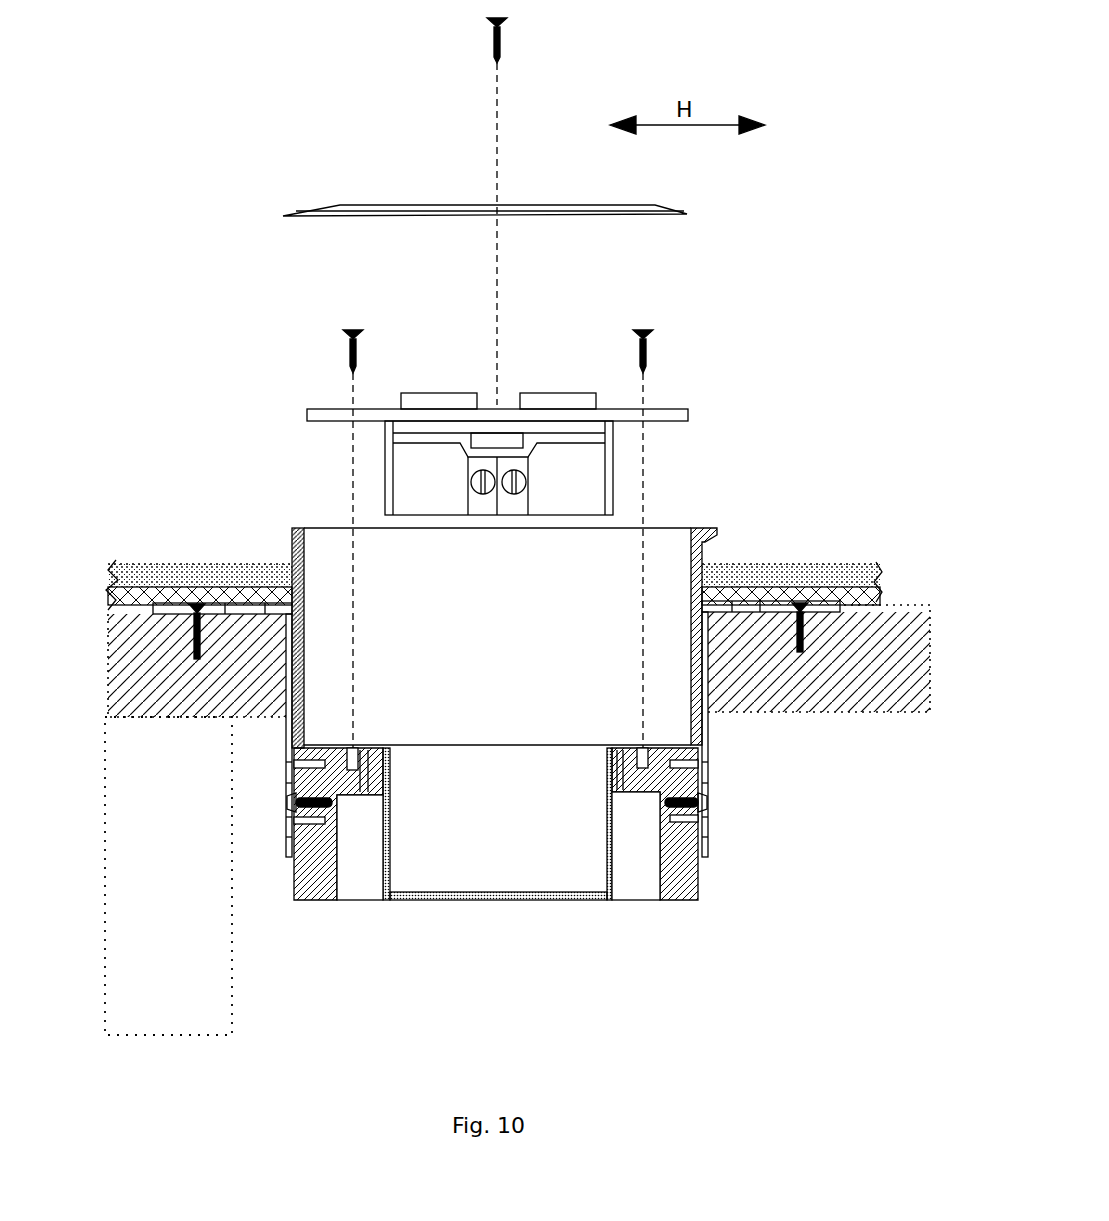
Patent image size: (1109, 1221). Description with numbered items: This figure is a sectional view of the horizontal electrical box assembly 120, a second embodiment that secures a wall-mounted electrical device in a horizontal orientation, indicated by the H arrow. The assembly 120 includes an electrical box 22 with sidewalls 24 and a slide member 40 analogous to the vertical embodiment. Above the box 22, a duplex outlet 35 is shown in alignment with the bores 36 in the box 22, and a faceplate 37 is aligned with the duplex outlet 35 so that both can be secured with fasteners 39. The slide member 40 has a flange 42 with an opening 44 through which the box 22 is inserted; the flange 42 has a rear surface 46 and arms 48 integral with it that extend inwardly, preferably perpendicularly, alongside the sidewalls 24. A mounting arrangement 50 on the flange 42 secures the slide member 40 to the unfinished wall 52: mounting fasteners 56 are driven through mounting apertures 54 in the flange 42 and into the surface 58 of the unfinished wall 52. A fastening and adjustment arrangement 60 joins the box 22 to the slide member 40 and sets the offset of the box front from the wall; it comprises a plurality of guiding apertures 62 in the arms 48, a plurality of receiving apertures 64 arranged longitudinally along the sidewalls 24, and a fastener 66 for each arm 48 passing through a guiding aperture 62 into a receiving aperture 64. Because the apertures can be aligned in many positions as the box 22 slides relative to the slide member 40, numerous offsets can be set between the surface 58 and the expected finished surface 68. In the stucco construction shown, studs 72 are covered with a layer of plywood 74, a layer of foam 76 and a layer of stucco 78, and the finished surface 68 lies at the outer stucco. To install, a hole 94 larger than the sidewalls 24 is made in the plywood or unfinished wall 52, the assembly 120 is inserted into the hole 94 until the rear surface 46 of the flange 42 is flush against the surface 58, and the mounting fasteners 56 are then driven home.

The electrical box 22 is at (294, 540).
The sidewalls 24 is at (304, 677).
The duplex outlet 35 is at (307, 414).
The bores 36 is at (355, 745).
The faceplate 37 is at (300, 216).
The fasteners 39 is at (492, 43).
The slide member 40 is at (304, 640).
The flange 42 is at (173, 615).
The opening 44 is at (691, 612).
The rear surface 46 is at (253, 637).
The arms 48 is at (288, 857).
The mounting arrangement 50 is at (187, 584).
The unfinished wall 52 is at (912, 640).
The mounting apertures 54 is at (798, 604).
The mounting fasteners 56 is at (795, 630).
The surface 58 is at (905, 583).
The fastening and adjustment arrangement 60 is at (236, 809).
The guiding apertures 62 is at (288, 770).
The receiving apertures 64 is at (325, 765).
The fastener 66 is at (288, 812).
The expected finished surface 68 is at (726, 540).
The studs 72 is at (202, 1015).
The layer of plywood 74 is at (893, 672).
The layer of foam 76 is at (858, 602).
The layer of stucco 78 is at (828, 590).
The hole 94 is at (713, 712).
The horizontal electrical box assembly 120 is at (754, 897).